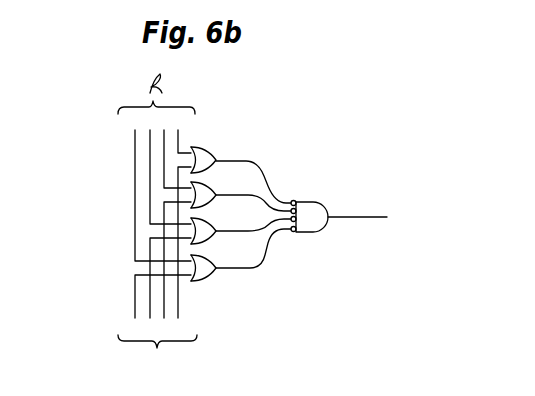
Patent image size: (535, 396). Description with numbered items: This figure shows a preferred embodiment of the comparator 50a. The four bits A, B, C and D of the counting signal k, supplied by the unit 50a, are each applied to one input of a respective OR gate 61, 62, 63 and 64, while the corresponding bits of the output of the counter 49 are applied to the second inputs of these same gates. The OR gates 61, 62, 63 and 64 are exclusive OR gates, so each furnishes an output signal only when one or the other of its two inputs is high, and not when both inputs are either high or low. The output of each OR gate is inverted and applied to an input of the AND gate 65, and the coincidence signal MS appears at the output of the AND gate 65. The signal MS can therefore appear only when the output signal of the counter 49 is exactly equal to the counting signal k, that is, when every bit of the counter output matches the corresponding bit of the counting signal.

The comparator 50a is at (104, 167).
The counter 49 is at (162, 273).
The OR gate 61 is at (214, 148).
The OR gate 62 is at (212, 191).
The OR gate 63 is at (214, 224).
The OR gate 64 is at (215, 265).
The AND gate 65 is at (308, 210).